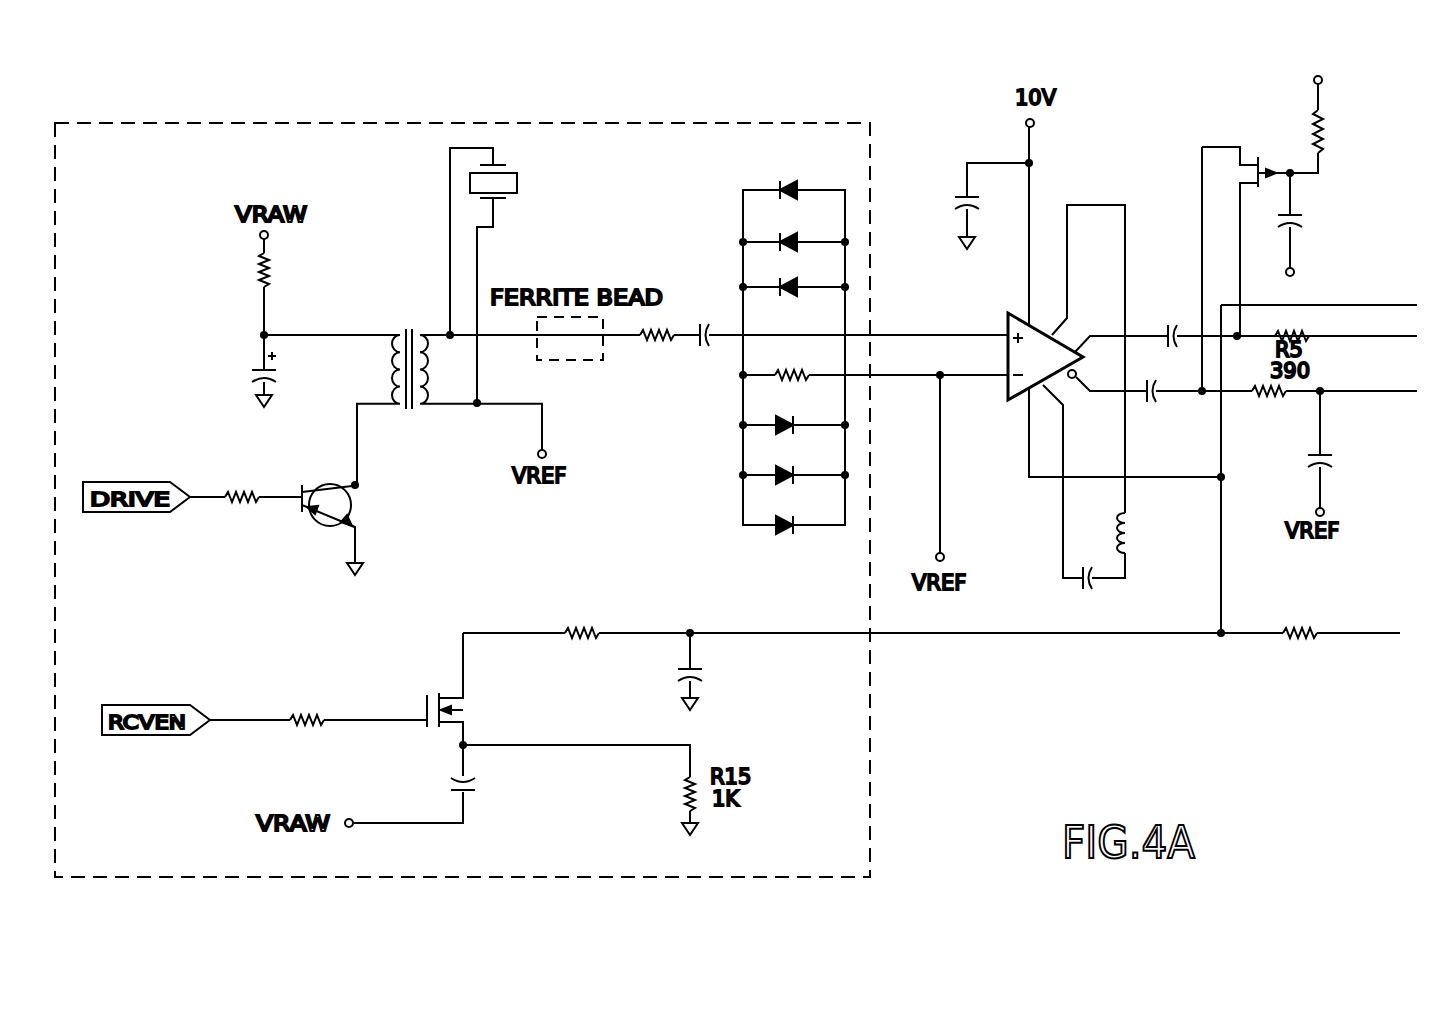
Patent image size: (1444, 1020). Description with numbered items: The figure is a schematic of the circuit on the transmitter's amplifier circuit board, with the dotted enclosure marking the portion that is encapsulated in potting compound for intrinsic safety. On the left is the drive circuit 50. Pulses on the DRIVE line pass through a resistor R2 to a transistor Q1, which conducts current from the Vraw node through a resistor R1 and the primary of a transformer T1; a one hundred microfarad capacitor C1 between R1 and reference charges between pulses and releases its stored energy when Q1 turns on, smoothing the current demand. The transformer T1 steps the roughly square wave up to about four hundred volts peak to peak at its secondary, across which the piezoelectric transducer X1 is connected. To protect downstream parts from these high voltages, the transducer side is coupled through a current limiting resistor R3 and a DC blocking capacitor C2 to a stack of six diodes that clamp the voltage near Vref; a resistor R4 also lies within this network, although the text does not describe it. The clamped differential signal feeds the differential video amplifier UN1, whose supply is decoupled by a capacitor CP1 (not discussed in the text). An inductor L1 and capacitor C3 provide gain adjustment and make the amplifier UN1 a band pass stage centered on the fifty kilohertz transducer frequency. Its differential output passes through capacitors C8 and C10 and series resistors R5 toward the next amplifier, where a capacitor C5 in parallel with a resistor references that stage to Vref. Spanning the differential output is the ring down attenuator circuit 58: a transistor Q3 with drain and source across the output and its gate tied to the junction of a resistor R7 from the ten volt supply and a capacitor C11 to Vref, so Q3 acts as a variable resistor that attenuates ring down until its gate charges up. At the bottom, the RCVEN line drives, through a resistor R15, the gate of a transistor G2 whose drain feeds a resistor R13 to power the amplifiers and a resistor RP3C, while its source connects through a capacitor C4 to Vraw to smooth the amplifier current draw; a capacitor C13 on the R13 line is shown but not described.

The drive circuit 50 is at (766, 337).
The ring down attenuator circuit 58 is at (1292, 217).
The resistor R1 is at (292, 287).
The capacitor C1 is at (300, 379).
The transformer T1 is at (403, 392).
The transducer X1 is at (557, 275).
The resistor R2 is at (247, 494).
The resistor R3 is at (677, 365).
The capacitor C2 is at (707, 324).
The transistor Q1 is at (329, 529).
The resistor R4 220 R4 is at (794, 377).
The differential video amplifier integrated circuit UN1 is at (1022, 343).
The capacitor CP1 .01UF CP1 is at (992, 206).
The inductor L1 is at (1158, 534).
The capacitor C3 is at (1105, 575).
The capacitor C8 is at (1165, 311).
The capacitor C10 is at (1158, 416).
The resistor R5 is at (1265, 416).
The capacitor C5 is at (1353, 453).
The transistor Q3 is at (1247, 266).
The resistor R7 is at (1336, 128).
The capacitor C11 is at (1322, 224).
The resistor R13 is at (534, 629).
The resistor RP3C is at (1337, 632).
The capacitor C13 .1UF C13 is at (720, 671).
The resistor R15 100 R15 is at (313, 717).
The transistor G2 is at (416, 704).
The capacitor C4 is at (450, 793).